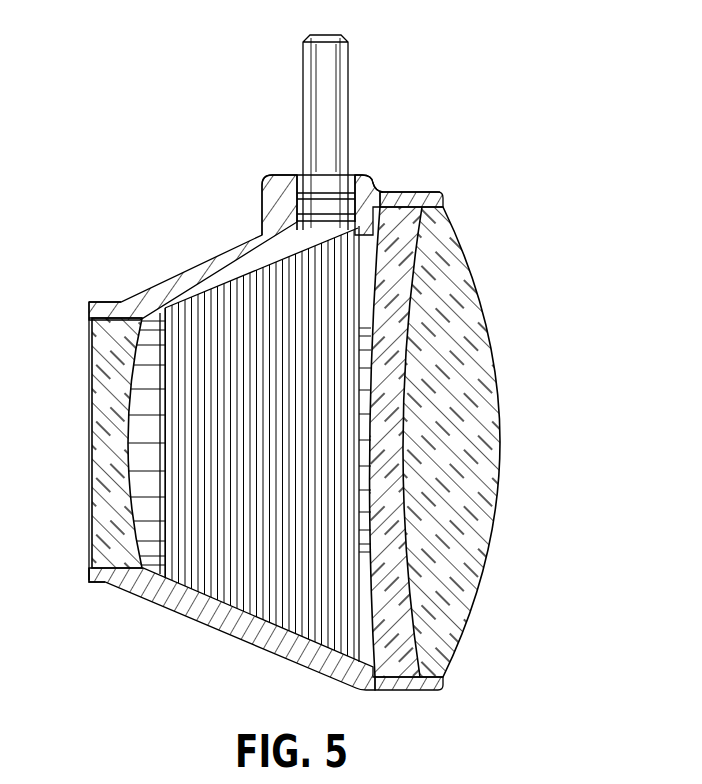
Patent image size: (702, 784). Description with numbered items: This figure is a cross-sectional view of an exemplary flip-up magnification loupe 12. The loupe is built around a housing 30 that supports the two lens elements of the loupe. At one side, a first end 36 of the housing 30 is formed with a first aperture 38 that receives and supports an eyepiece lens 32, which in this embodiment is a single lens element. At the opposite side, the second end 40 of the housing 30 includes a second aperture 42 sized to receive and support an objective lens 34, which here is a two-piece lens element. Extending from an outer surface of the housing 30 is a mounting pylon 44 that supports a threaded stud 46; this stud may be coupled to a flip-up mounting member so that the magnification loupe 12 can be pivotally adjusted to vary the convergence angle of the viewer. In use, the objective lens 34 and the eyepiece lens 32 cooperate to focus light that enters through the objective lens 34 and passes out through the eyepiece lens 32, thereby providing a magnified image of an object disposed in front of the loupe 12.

The magnification loupe 12 is at (590, 217).
The housing 30 is at (188, 266).
The eyepiece lens 32 is at (92, 424).
The objective lens 34 is at (490, 344).
The first end 36 is at (89, 306).
The first aperture 38 is at (89, 552).
The second end 40 is at (442, 201).
The second aperture 42 is at (452, 658).
The mounting pylon 44 is at (273, 176).
The threaded stud 46 is at (349, 111).